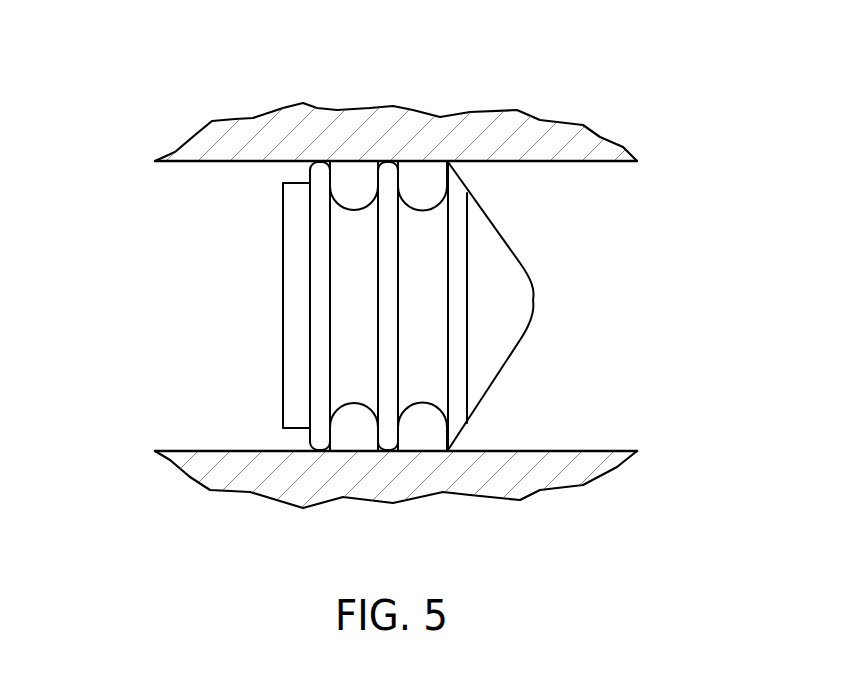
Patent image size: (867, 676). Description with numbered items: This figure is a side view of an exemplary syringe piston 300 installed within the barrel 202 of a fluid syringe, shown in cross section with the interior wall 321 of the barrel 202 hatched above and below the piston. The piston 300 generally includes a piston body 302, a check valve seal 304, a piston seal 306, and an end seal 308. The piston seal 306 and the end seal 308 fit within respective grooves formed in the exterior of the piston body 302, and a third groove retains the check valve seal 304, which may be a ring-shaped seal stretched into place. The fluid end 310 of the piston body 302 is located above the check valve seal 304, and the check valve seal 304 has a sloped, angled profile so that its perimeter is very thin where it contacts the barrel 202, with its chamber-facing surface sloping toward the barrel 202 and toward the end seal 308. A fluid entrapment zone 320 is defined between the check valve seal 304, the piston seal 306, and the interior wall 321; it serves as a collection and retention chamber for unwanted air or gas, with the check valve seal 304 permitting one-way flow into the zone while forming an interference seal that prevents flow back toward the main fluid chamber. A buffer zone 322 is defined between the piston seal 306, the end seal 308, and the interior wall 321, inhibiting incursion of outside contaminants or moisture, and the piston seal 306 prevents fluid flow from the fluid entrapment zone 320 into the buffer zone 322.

The barrel 202 is at (542, 162).
The interior wall 321 is at (590, 163).
The syringe piston 300 is at (196, 242).
The piston body 302 is at (283, 212).
The check valve seal 304 is at (460, 378).
The piston seal 306 is at (388, 163).
The end seal 308 is at (322, 163).
The fluid end 310 is at (518, 260).
The fluid entrapment zone 320 is at (424, 168).
The buffer zone 322 is at (354, 168).